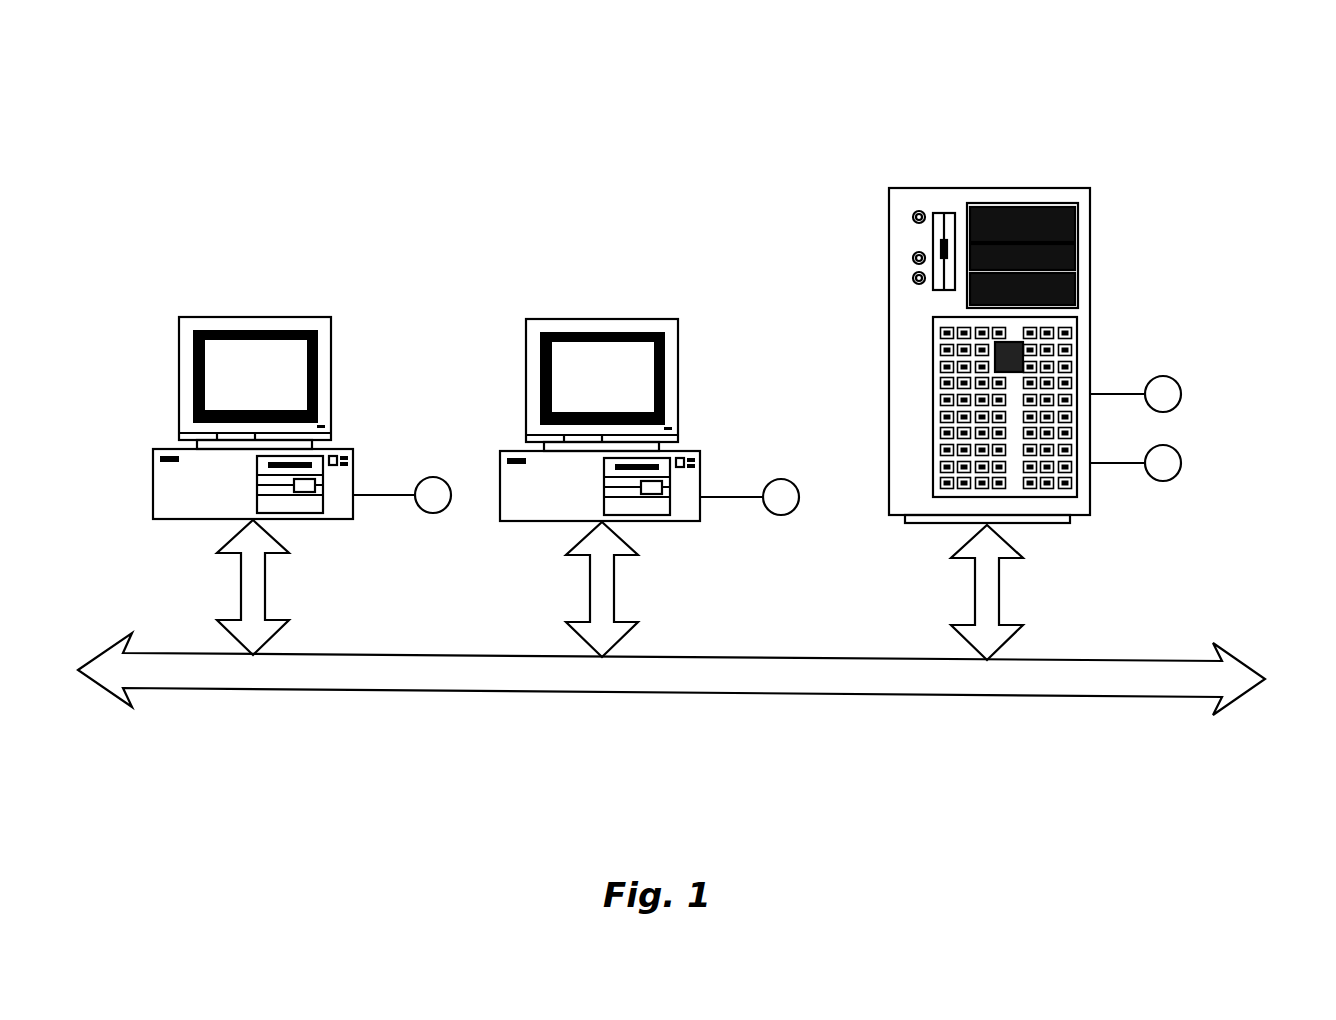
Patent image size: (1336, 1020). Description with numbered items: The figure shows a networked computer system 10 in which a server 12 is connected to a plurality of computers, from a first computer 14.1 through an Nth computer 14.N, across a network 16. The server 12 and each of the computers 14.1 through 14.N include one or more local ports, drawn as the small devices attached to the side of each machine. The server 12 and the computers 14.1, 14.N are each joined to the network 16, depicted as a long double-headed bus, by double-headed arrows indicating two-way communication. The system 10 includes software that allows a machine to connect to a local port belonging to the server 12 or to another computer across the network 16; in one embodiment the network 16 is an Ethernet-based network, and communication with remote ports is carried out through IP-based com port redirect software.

The networked computer system 10 is at (277, 85).
The server 12 is at (988, 188).
The computer 14.1 is at (258, 317).
The computer 14.N is at (603, 318).
The network 16 is at (677, 693).